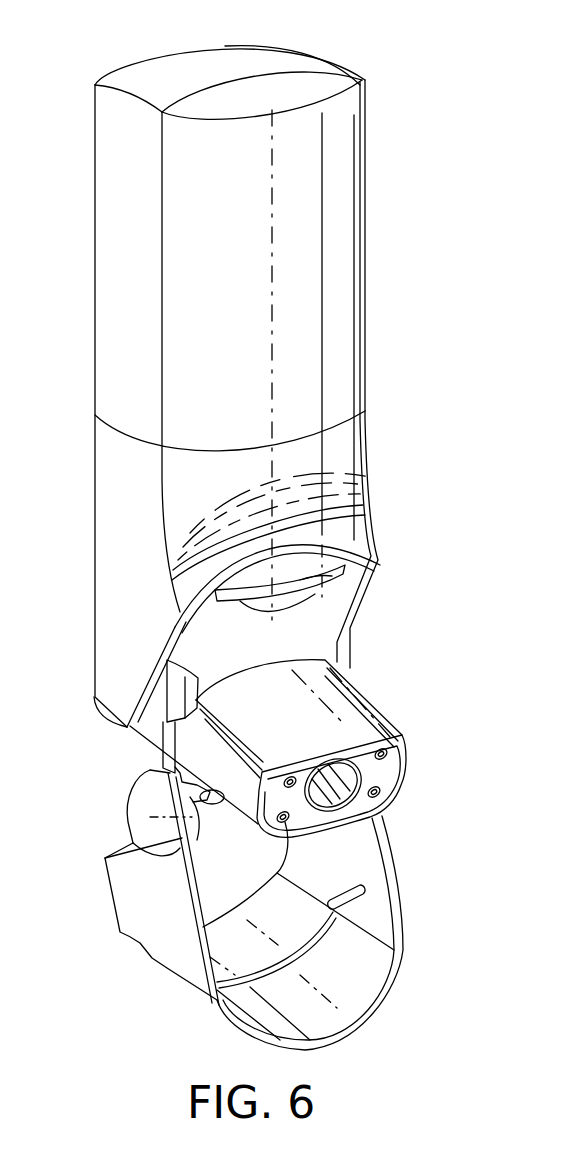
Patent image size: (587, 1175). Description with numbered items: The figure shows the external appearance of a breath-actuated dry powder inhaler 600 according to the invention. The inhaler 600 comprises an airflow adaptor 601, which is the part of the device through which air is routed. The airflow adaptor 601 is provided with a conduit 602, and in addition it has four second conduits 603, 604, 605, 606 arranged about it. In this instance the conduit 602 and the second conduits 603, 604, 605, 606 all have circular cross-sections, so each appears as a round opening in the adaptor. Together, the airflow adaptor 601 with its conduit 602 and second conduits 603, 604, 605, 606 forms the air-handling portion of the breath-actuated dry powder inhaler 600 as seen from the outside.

The breath-actuated dry powder inhaler 600 is at (240, 26).
The airflow adaptor 601 is at (392, 775).
The conduit 602 is at (345, 795).
The second conduit 603 is at (380, 791).
The second conduit 604 is at (387, 755).
The second conduit 605 is at (290, 784).
The second conduit 606 is at (195, 915).